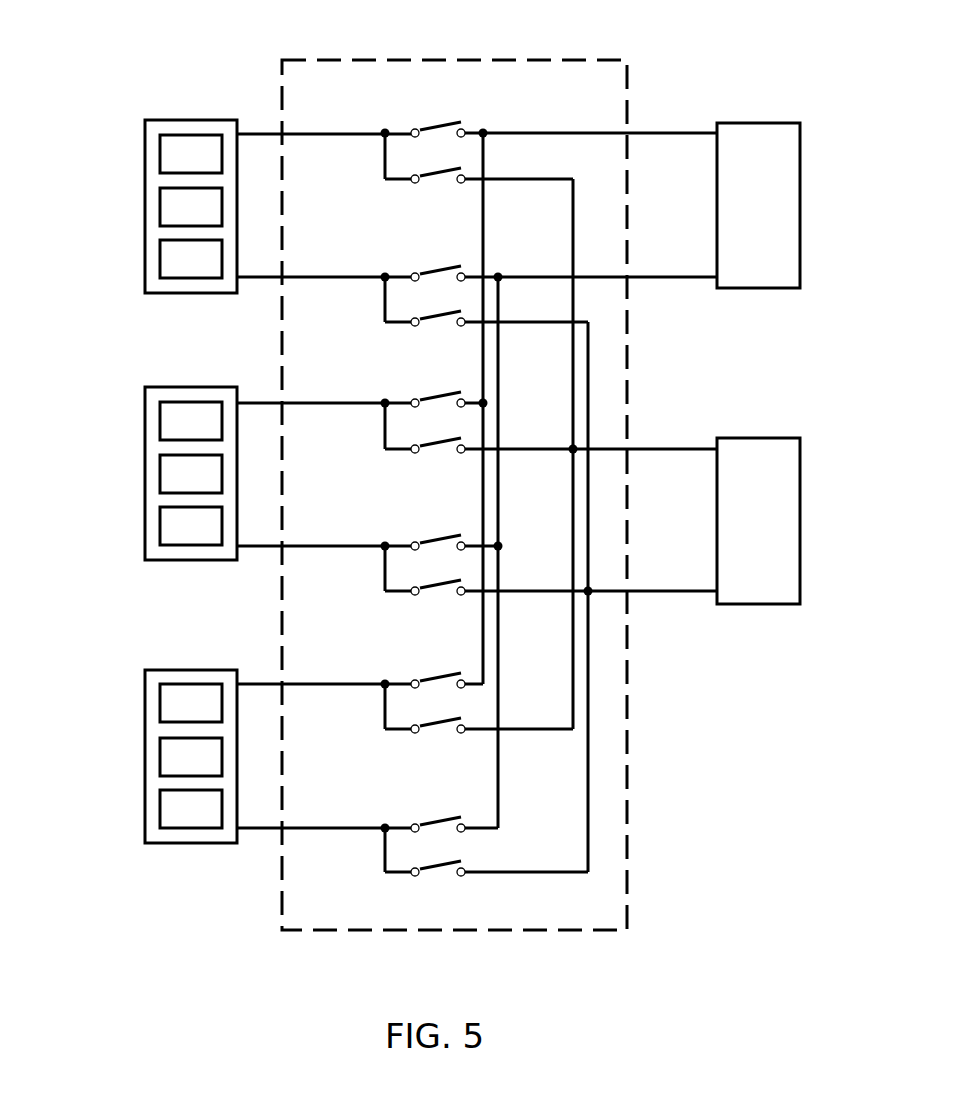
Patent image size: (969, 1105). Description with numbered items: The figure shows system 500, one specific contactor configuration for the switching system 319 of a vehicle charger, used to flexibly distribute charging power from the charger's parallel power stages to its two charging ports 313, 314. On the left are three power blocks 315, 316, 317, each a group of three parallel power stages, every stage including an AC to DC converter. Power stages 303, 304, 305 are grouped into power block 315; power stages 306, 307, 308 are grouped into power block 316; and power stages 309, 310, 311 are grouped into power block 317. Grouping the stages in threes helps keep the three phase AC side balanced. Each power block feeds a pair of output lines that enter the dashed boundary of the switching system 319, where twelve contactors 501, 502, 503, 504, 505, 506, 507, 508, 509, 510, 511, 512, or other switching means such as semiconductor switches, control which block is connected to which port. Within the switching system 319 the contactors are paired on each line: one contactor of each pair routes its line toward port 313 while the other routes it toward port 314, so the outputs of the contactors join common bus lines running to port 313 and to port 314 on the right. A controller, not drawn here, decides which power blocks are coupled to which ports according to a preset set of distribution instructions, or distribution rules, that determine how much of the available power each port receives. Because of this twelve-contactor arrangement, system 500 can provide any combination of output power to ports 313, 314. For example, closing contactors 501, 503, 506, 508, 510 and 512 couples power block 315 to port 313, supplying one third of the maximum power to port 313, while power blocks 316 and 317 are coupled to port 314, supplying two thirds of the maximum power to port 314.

The power stage 303 is at (191, 154).
The power stage 304 is at (191, 207).
The power stage 305 is at (191, 259).
The power stage 306 is at (191, 421).
The power stage 307 is at (191, 474).
The power stage 308 is at (191, 526).
The power stage 309 is at (191, 703).
The power stage 310 is at (191, 757).
The power stage 311 is at (191, 809).
The charging port 313 is at (800, 180).
The charging port 314 is at (800, 478).
The power block 315 is at (168, 179).
The power block 316 is at (167, 447).
The power block 317 is at (167, 729).
The switching system 319 is at (522, 50).
The system 500 is at (714, 806).
The contactor 501 is at (438, 114).
The contactor 502 is at (432, 166).
The contactor 503 is at (438, 258).
The contactor 504 is at (432, 309).
The contactor 505 is at (438, 384).
The contactor 506 is at (432, 436).
The contactor 507 is at (438, 527).
The contactor 508 is at (432, 578).
The contactor 509 is at (438, 665).
The contactor 510 is at (432, 716).
The contactor 511 is at (438, 809).
The contactor 512 is at (432, 859).